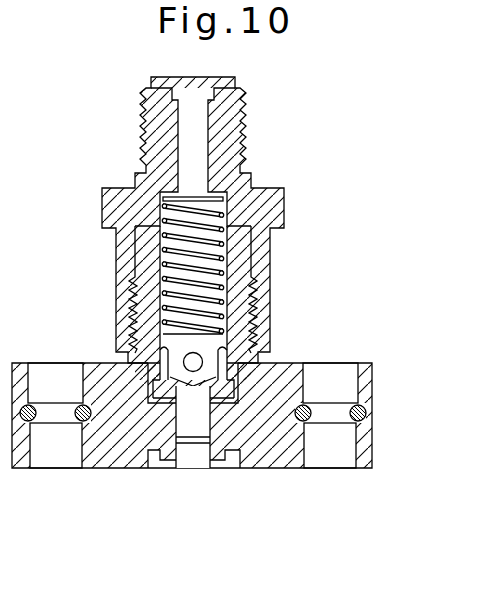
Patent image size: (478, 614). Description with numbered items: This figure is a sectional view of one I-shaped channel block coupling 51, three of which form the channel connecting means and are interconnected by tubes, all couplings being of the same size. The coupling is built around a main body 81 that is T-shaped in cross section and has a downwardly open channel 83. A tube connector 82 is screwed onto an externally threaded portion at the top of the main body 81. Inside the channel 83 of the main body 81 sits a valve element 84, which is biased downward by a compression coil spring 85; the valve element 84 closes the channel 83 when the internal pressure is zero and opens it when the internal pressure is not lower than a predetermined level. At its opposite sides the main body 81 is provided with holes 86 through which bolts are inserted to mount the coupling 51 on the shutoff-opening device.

The I-shaped channel block coupling 51 is at (222, 302).
The main body 81 is at (270, 447).
The tube connector 82 is at (283, 187).
The channel 83 is at (192, 427).
The valve element 84 is at (172, 386).
The compression coil spring 85 is at (216, 273).
The holes 86 is at (303, 372).